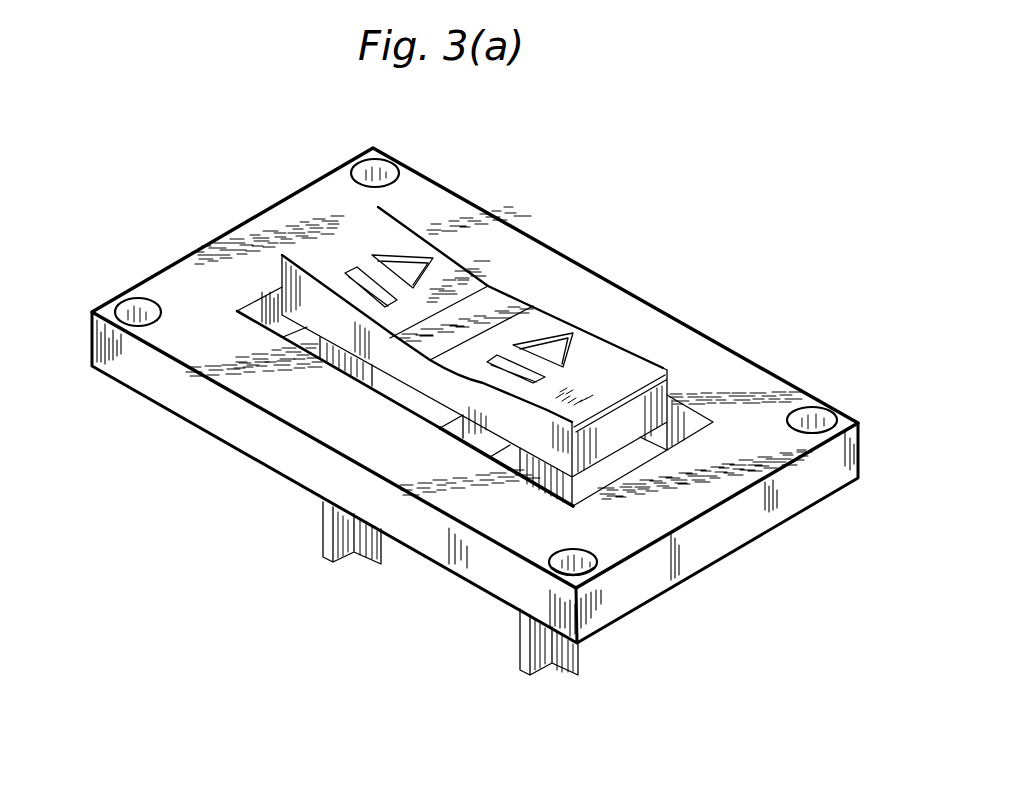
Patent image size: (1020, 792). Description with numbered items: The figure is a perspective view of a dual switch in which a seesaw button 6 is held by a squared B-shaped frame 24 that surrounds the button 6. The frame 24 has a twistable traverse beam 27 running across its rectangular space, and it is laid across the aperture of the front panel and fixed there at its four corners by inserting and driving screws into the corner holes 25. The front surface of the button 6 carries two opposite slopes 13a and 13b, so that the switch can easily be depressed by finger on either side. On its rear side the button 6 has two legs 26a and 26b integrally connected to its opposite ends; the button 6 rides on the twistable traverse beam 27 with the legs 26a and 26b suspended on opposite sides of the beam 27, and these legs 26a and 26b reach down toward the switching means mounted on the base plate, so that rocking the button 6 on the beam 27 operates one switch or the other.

The seesaw button 6 is at (484, 331).
The slope 13a is at (408, 233).
The slope 13b is at (625, 365).
The squared B-shaped frame 24 is at (187, 402).
The corner hole 25 is at (140, 297).
The leg 26a is at (333, 564).
The leg 26b is at (538, 677).
The twistable traverse beam 27 is at (395, 402).